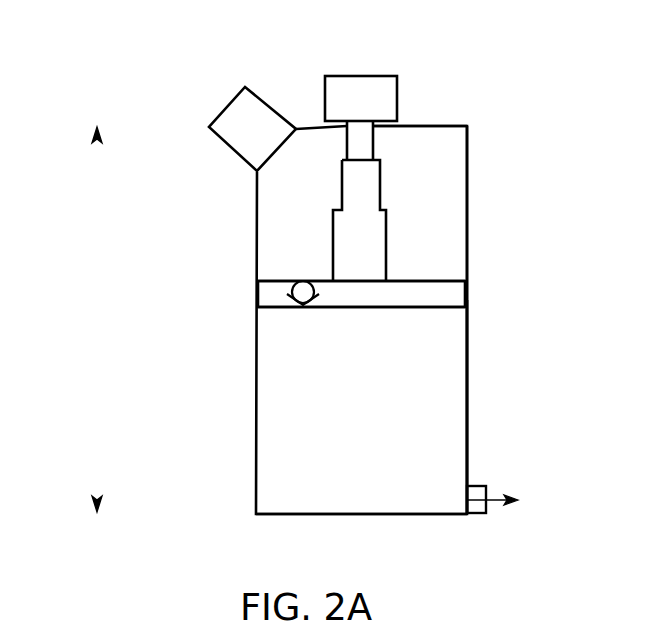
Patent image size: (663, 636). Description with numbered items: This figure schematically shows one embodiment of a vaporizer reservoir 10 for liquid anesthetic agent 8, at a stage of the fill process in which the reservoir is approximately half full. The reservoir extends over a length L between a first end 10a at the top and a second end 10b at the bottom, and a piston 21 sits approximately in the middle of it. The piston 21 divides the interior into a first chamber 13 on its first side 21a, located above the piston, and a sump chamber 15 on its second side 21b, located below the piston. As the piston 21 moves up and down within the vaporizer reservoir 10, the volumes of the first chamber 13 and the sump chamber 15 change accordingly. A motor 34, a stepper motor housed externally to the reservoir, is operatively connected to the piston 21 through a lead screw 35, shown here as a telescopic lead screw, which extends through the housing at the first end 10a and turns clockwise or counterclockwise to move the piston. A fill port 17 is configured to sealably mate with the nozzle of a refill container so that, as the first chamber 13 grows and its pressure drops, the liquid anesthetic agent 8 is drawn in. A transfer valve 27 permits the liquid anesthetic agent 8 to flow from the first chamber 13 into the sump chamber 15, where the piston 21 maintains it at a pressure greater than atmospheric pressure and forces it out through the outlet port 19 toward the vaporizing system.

The liquid anesthetic agent 8 is at (452, 428).
The vaporizer reservoir 10 is at (255, 240).
The first end 10a is at (447, 125).
The second end 10b is at (385, 517).
The first chamber 13 is at (456, 186).
The sump chamber 15 is at (256, 394).
The fill port 17 is at (233, 112).
The outlet port 19 is at (487, 513).
The piston 21 is at (444, 294).
The first side 21a is at (438, 280).
The second side 21b is at (447, 310).
The transfer valve 27 is at (258, 294).
The motor 34 is at (362, 89).
The lead screw 35 is at (362, 140).
The length L is at (97, 322).